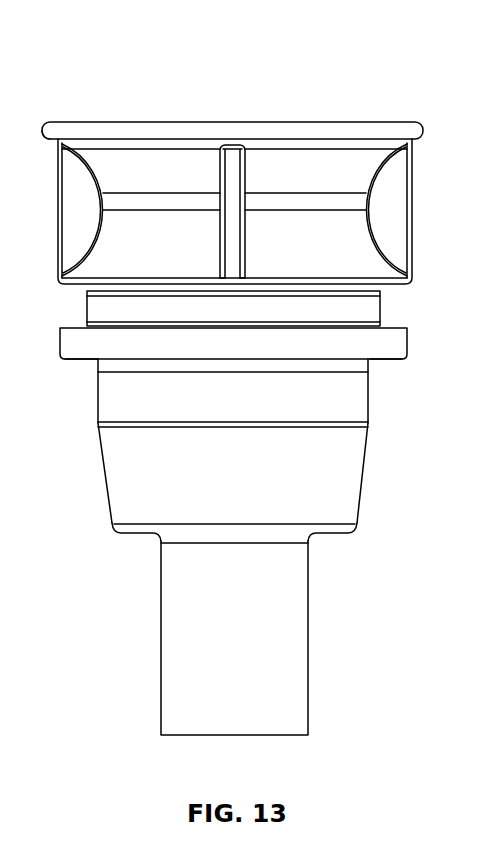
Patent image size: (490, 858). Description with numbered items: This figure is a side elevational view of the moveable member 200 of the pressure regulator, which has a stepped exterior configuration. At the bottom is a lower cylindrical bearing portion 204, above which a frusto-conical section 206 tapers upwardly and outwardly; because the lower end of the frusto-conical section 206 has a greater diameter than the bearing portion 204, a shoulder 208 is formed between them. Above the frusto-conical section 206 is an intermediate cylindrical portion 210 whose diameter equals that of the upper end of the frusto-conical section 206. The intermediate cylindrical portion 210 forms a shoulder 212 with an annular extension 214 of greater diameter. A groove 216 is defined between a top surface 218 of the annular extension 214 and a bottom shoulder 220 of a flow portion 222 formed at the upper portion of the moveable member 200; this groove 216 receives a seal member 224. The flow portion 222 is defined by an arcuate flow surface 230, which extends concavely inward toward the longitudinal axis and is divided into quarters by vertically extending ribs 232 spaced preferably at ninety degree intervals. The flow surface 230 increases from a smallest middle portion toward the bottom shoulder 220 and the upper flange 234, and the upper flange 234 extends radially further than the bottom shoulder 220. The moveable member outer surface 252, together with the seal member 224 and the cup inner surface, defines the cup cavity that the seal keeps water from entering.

The moveable member 200 is at (305, 52).
The lower cylindrical bearing portion 204 is at (158, 667).
The frusto-conical section 206 is at (102, 493).
The shoulder 208 is at (125, 533).
The intermediate cylindrical portion 210 is at (370, 393).
The shoulder 212 is at (83, 360).
The annular extension 214 is at (62, 336).
The groove 216 is at (383, 310).
The top surface 218 is at (80, 323).
The bottom shoulder 220 is at (395, 290).
The flow portion 222 is at (420, 175).
The seal member 224 is at (489, 328).
The arcuate flow surface 230 is at (97, 182).
The vertically extending ribs 232 is at (70, 138).
The upper flange 234 is at (48, 133).
The moveable member outer surface 252 is at (367, 530).